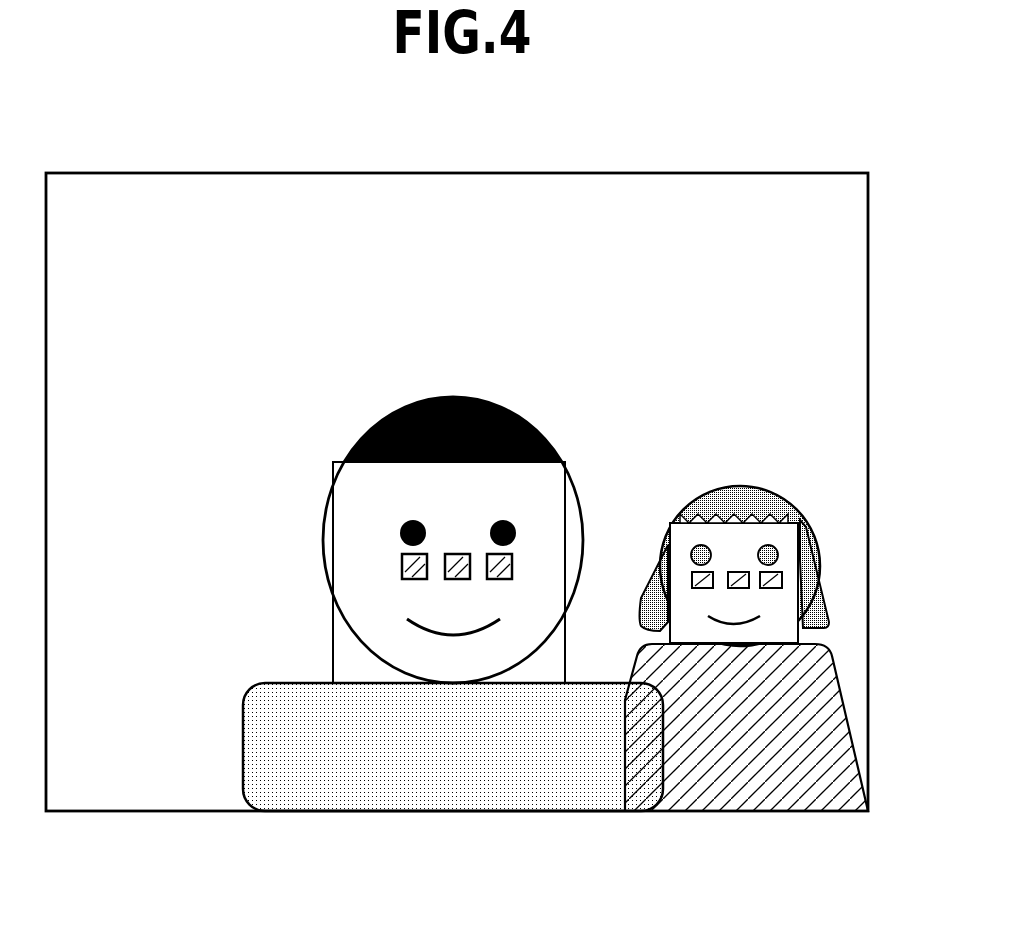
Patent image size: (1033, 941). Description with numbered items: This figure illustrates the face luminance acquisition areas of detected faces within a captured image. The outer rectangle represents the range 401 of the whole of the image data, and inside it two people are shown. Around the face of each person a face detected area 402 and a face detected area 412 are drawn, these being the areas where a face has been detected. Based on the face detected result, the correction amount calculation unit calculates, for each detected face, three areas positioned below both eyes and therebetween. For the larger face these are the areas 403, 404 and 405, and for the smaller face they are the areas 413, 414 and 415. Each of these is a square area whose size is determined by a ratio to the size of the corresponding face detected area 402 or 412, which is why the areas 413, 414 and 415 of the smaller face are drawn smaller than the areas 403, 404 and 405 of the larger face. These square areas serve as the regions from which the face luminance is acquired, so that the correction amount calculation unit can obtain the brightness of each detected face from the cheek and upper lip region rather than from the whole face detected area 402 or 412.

The range of the whole of image data 401 is at (231, 173).
The face detected area 402 is at (330, 526).
The face luminance acquisition area 403 is at (415, 582).
The face luminance acquisition area 404 is at (456, 580).
The face luminance acquisition area 405 is at (497, 580).
The face detected area 412 is at (666, 546).
The face luminance acquisition area 413 is at (692, 578).
The face luminance acquisition area 414 is at (738, 590).
The face luminance acquisition area 415 is at (782, 581).